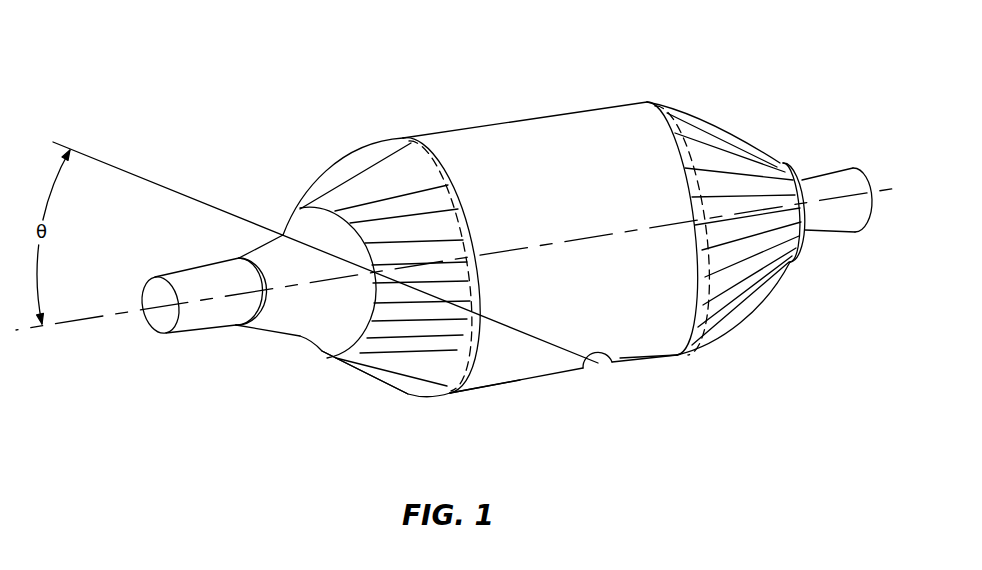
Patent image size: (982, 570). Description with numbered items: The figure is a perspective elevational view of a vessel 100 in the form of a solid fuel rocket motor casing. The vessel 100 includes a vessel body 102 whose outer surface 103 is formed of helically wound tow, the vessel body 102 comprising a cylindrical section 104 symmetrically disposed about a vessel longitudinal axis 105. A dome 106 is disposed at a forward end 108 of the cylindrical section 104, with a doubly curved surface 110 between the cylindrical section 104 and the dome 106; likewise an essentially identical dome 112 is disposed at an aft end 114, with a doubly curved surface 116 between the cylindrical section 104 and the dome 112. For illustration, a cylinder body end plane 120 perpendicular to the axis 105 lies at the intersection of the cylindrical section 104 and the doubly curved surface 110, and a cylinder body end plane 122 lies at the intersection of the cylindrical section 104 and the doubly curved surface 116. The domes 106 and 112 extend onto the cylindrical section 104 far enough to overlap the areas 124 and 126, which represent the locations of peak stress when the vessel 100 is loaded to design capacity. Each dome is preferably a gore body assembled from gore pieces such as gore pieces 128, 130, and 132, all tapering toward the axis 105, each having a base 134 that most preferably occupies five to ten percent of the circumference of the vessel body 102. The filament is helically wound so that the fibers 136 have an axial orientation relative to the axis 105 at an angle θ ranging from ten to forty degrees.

The vessel 100 is at (578, 112).
The vessel body 102 is at (477, 150).
The outer surface 103 is at (575, 178).
The cylindrical section 104 is at (652, 334).
The vessel longitudinal axis 105 is at (141, 307).
The dome 106 is at (330, 185).
The forward end 108 is at (407, 138).
The doubly curved surface 110 is at (358, 180).
The dome 112 is at (766, 146).
The aft end 114 is at (659, 99).
The doubly curved surface 116 is at (716, 162).
The cylinder body end plane 120 is at (450, 391).
The cylinder body end plane 122 is at (683, 355).
The area of peak stress 124 is at (403, 147).
The area of peak stress 126 is at (700, 323).
The gore piece 128 is at (377, 353).
The gore piece 130 is at (377, 372).
The gore piece 132 is at (387, 393).
The base 134 is at (487, 367).
The fibers 136 is at (612, 366).